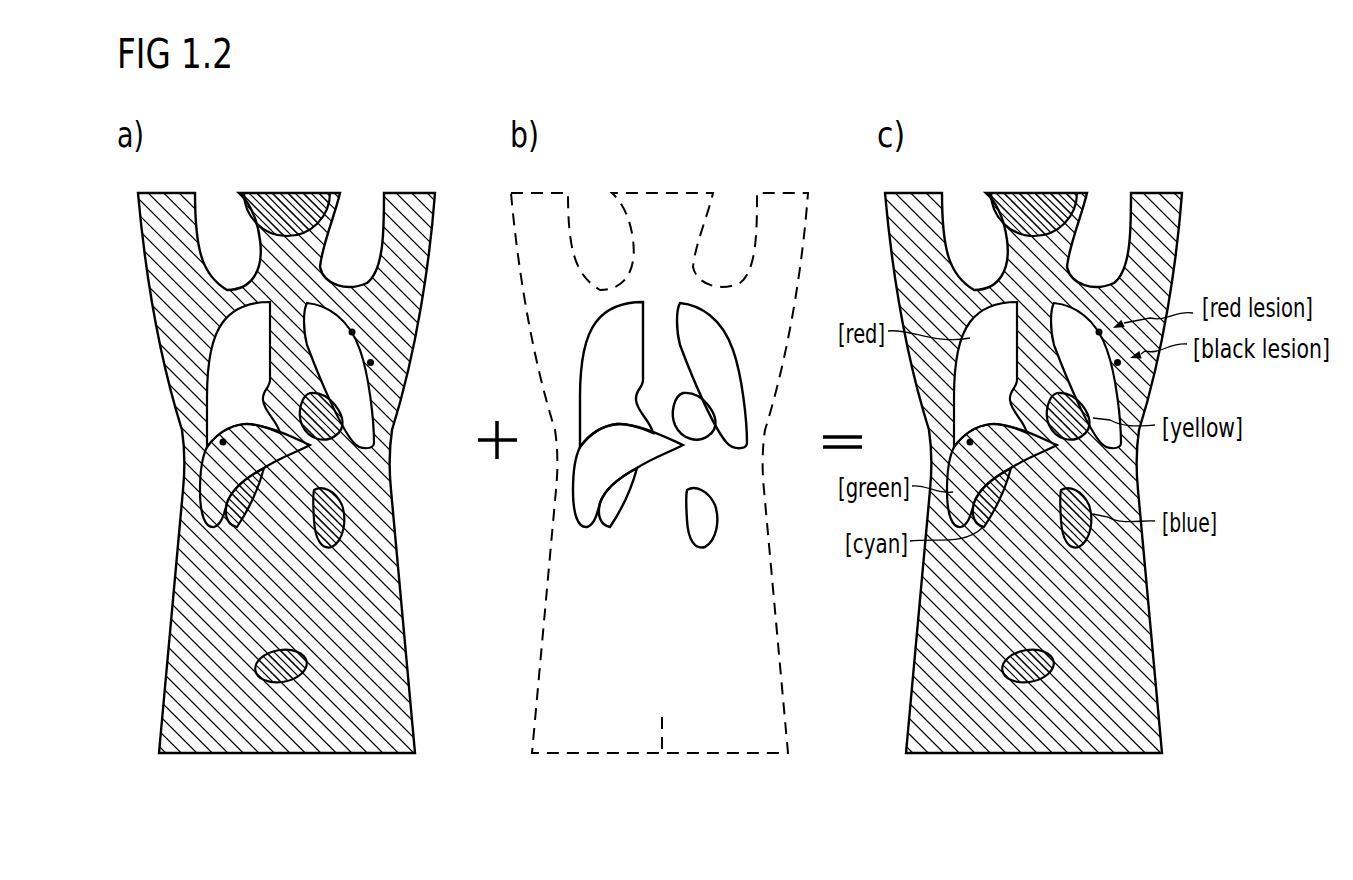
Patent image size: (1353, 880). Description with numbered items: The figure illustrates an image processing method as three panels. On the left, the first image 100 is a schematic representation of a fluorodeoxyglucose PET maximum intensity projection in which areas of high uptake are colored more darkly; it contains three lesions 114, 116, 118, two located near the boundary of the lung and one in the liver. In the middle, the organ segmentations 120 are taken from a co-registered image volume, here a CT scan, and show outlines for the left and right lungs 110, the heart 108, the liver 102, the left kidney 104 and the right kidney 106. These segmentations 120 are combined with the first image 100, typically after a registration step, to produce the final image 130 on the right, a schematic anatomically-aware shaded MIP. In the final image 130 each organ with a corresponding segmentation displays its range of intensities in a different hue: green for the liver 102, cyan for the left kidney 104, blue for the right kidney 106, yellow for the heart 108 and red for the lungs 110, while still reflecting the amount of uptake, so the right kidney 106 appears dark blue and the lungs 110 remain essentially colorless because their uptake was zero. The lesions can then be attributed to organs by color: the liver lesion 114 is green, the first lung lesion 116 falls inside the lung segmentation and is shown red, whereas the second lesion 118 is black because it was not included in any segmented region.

The first image 100 is at (287, 172).
The organ segmentations 120 is at (661, 172).
The final image 130 is at (1034, 172).
The liver 102 is at (212, 503).
The left kidney 104 is at (236, 527).
The right kidney 106 is at (343, 515).
The heart 108 is at (335, 418).
The lungs 110 is at (226, 337).
The liver lesion 114 is at (203, 448).
The first lung lesion 116 is at (367, 322).
The second lesion 118 is at (388, 355).